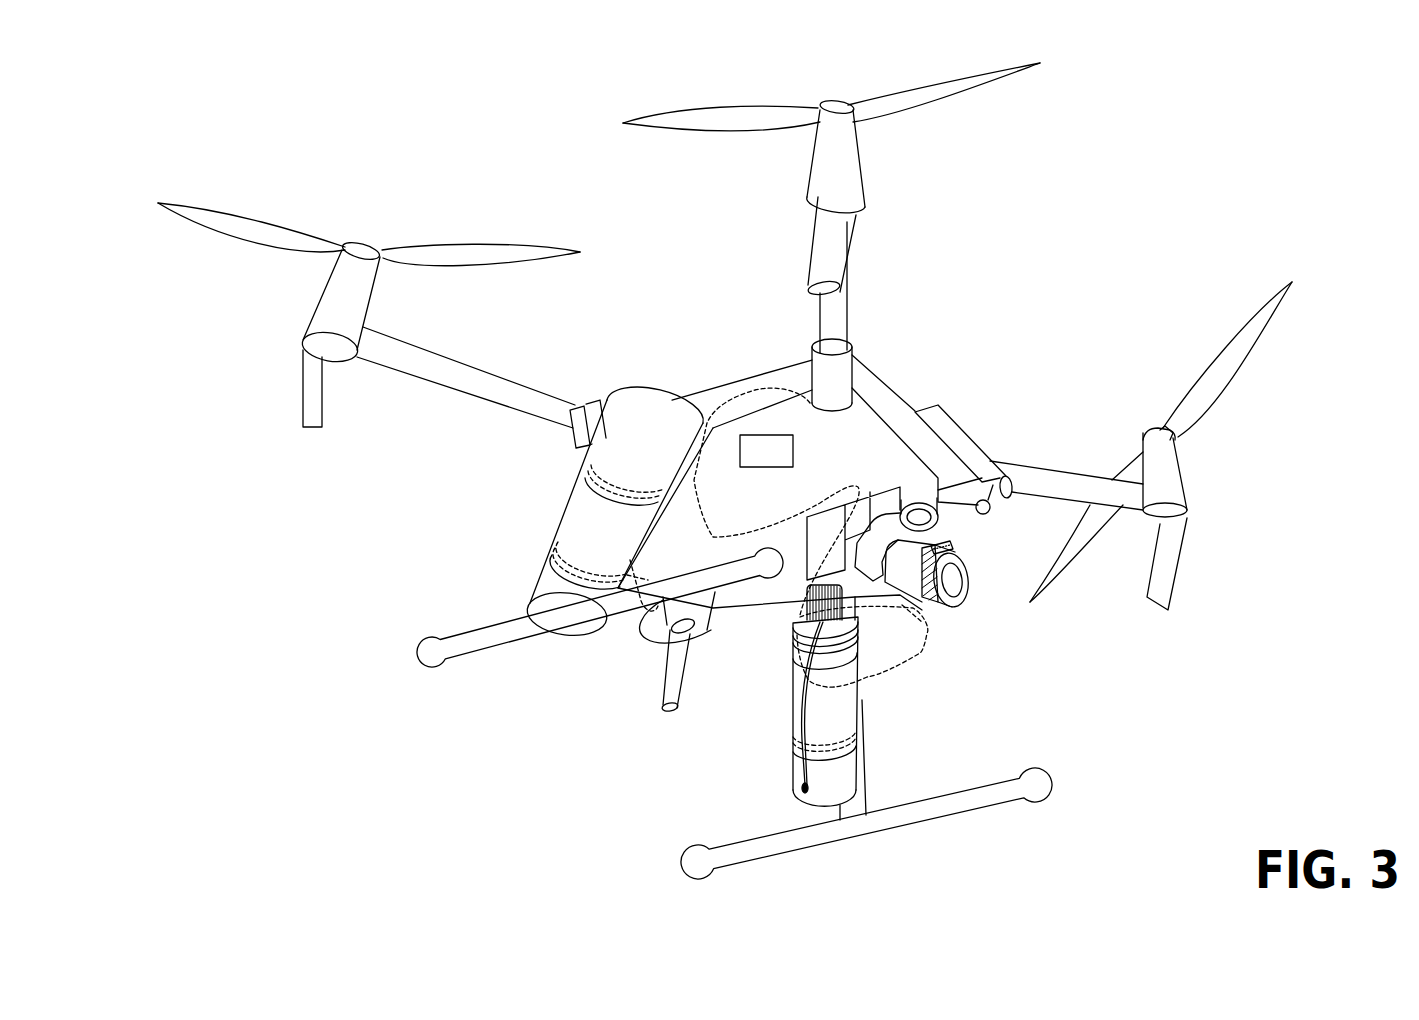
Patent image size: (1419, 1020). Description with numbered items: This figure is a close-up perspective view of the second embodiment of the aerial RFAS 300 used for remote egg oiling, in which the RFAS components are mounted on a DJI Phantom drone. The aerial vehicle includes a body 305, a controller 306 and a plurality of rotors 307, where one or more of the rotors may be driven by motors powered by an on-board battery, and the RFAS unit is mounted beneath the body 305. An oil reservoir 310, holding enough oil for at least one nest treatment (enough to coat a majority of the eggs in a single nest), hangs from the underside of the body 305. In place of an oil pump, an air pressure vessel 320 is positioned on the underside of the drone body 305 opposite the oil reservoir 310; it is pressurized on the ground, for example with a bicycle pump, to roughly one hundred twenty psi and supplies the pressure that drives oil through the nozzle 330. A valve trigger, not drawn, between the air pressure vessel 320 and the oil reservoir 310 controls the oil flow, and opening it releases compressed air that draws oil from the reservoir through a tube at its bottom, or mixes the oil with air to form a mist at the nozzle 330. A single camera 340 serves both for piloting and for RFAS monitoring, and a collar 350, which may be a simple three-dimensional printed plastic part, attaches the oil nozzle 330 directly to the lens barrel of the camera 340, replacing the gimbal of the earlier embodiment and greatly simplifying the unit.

The aerial RFAS 300 is at (168, 90).
The body 305 is at (882, 372).
The controller 306 is at (780, 463).
The rotors 307 is at (375, 243).
The oil reservoir 310 is at (795, 707).
The air pressure vessel 320 is at (567, 503).
The nozzle 330 is at (957, 549).
The camera 340 is at (968, 570).
The collar 350 is at (936, 603).